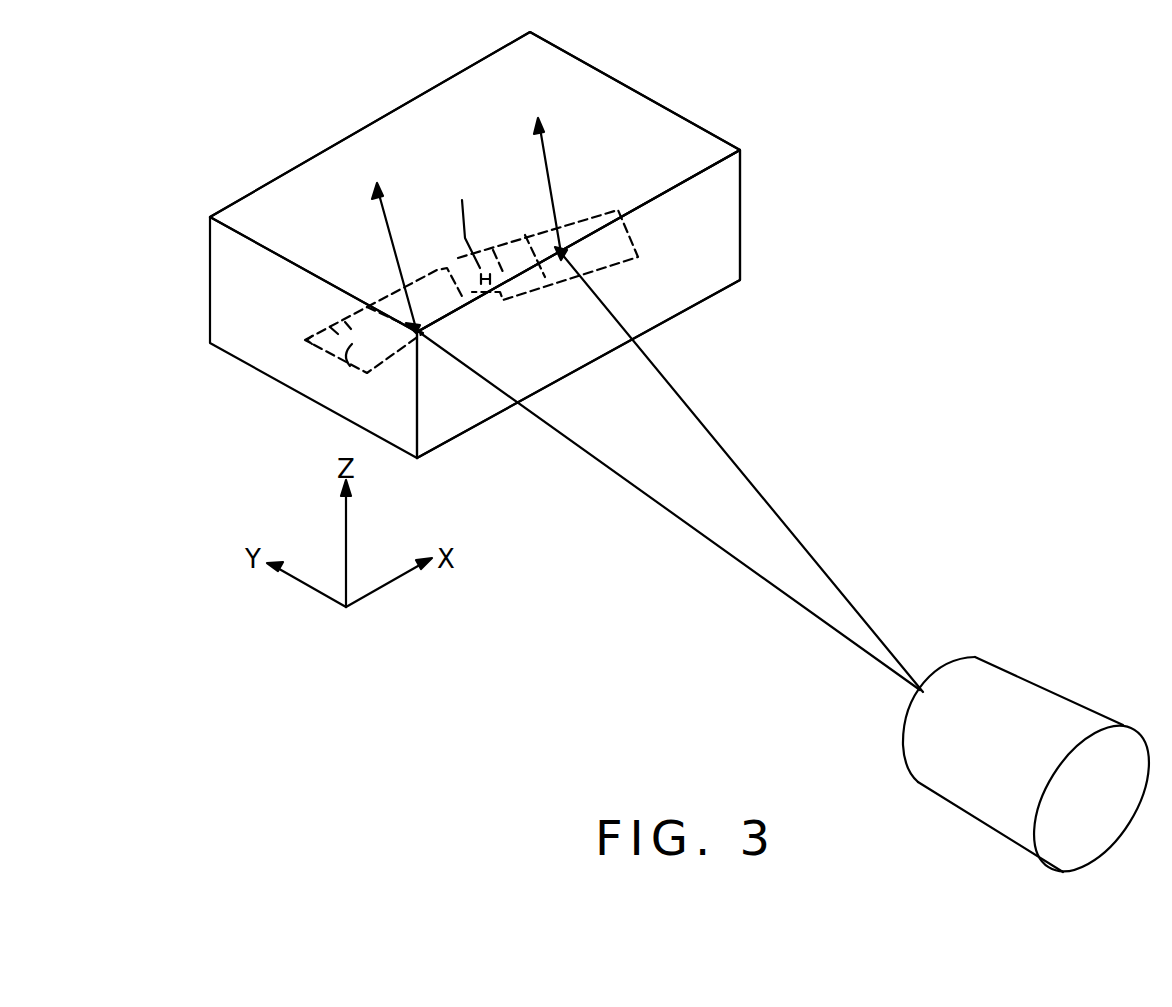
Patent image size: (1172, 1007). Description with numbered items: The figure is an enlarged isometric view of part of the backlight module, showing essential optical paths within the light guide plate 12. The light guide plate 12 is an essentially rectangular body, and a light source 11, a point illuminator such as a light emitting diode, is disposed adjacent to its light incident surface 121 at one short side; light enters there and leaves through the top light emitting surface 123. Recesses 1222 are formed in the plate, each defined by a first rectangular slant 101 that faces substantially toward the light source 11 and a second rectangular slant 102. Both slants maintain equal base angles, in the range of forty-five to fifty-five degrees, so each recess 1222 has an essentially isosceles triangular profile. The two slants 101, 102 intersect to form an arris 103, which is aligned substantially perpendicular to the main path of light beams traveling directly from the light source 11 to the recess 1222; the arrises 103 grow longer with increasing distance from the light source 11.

The light source 11 is at (1050, 718).
The light guide plate 12 is at (774, 185).
The light incident surface 121 is at (703, 223).
The top light emitting surface 123 is at (572, 90).
The recess 1222 is at (600, 212).
The first rectangular slant 101 is at (437, 303).
The second rectangular slant 102 is at (385, 300).
The arris 103 is at (407, 328).